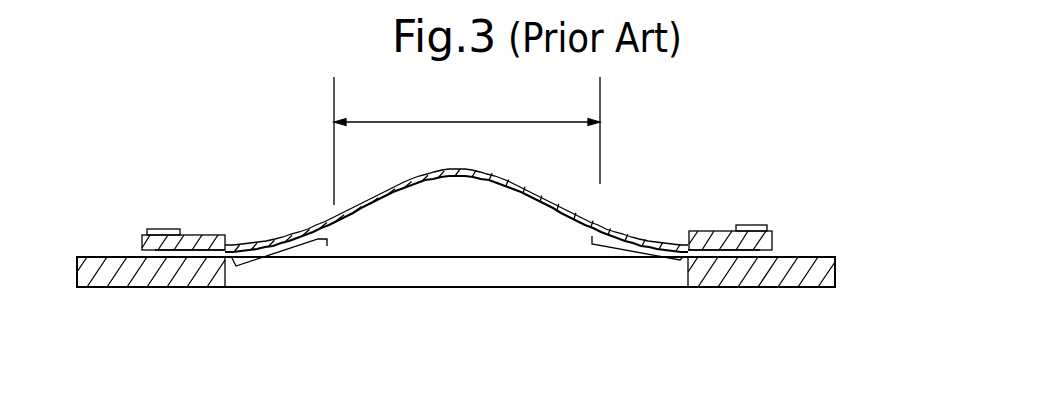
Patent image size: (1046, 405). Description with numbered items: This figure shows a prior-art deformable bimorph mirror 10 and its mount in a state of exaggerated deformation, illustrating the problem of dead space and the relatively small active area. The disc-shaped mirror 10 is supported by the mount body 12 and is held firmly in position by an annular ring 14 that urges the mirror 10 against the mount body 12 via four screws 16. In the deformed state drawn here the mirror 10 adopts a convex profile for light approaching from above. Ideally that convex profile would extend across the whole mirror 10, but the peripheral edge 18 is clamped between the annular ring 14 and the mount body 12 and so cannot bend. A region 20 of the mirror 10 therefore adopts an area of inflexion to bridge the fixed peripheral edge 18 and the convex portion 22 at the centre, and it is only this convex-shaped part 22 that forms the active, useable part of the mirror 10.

The deformable bimorph mirror 10 is at (531, 201).
The mount body 12 is at (190, 277).
The annular ring 14 is at (205, 240).
The screws 16 is at (165, 228).
The peripheral edge 18 is at (706, 252).
The region of inflexion 20 is at (282, 258).
The convex portion 22 is at (453, 120).